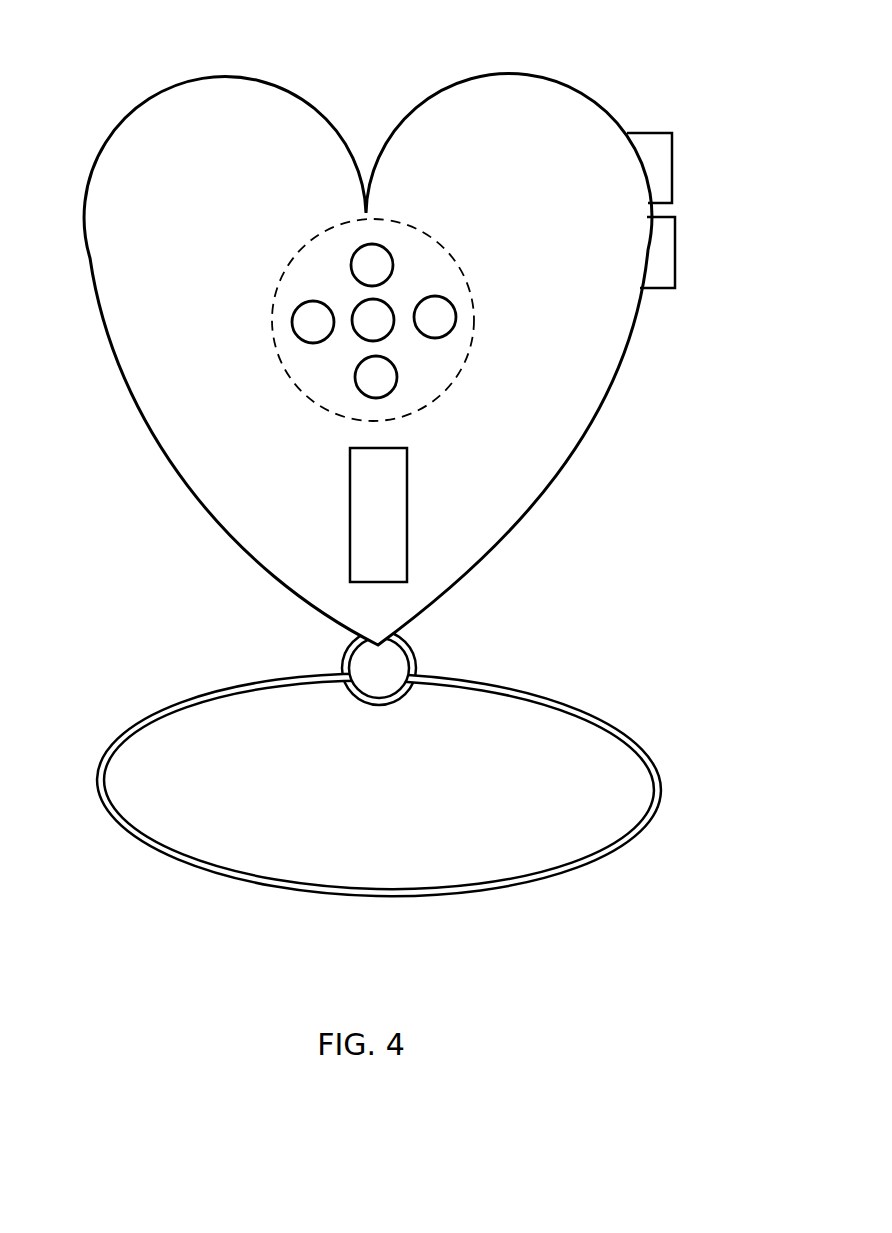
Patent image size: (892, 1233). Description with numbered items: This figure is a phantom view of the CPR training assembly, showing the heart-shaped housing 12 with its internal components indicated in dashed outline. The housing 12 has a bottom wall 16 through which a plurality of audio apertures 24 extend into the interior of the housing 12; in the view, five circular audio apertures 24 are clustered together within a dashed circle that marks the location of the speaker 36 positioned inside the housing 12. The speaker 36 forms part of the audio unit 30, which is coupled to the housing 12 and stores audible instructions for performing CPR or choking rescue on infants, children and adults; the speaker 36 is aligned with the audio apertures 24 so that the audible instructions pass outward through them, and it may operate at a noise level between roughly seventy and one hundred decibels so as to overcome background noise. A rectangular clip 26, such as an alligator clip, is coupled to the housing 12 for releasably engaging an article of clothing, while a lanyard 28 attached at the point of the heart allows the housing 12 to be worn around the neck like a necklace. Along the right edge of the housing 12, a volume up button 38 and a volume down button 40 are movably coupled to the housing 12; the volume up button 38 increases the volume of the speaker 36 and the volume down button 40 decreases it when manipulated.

The housing 12 is at (406, 328).
The bottom wall 16 is at (177, 173).
The audio apertures 24 is at (138, 535).
The clip 26 is at (407, 515).
The lanyard 28 is at (190, 697).
The audio unit 30 is at (378, 284).
The speaker 36 is at (468, 363).
The volume up button 38 is at (672, 165).
The volume down button 40 is at (675, 245).